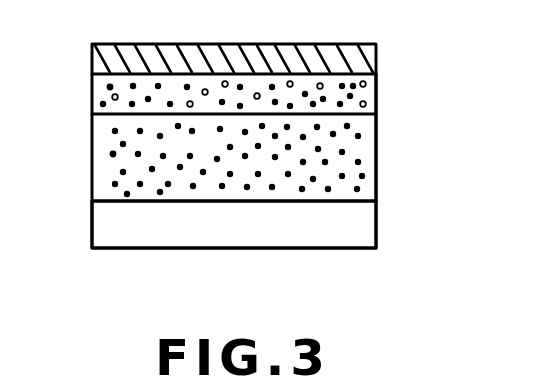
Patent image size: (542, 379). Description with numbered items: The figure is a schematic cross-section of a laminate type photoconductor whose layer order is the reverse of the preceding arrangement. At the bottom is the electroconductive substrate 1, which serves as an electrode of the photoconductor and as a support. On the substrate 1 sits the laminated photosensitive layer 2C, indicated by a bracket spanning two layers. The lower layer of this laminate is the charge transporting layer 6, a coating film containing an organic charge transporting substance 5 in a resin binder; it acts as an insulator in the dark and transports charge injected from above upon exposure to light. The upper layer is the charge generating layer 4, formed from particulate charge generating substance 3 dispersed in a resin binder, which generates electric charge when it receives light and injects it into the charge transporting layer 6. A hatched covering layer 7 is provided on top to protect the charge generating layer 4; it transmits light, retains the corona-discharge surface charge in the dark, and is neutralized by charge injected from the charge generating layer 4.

The electroconductive substrate 1 is at (363, 226).
The laminated photosensitive layer 2C is at (457, 80).
The charge generating substance 3 is at (108, 89).
The charge generating layer 4 is at (367, 93).
The charge transporting substance 5 is at (112, 156).
The charge transporting layer 6 is at (357, 143).
The covering layer 7 is at (376, 60).